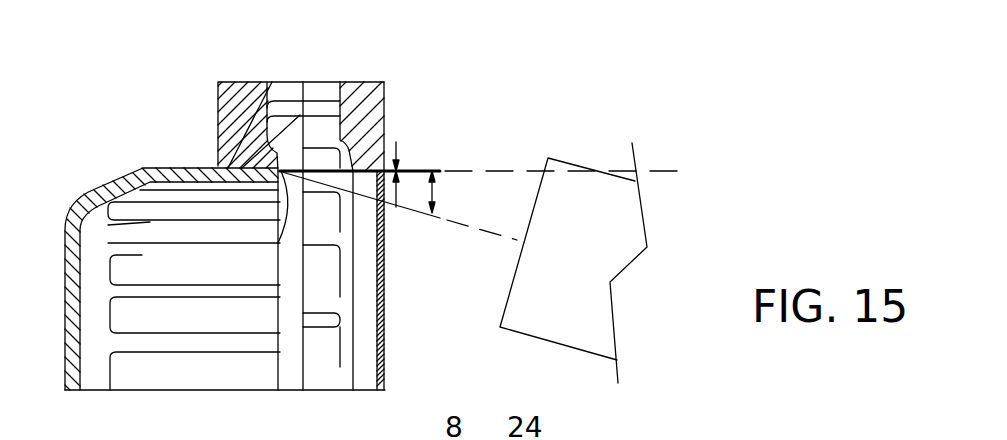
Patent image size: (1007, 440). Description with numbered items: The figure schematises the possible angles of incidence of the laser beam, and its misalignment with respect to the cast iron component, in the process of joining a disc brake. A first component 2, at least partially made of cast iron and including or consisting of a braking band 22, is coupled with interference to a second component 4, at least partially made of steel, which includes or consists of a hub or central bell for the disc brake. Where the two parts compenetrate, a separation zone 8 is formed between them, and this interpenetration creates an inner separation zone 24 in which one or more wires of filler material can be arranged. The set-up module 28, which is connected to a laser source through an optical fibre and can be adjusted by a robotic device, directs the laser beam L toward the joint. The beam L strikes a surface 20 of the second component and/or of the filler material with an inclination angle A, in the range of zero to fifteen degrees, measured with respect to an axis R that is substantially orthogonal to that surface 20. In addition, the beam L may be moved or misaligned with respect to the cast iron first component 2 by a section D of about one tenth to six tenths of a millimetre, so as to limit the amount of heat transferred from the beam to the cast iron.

The first component 2 is at (218, 122).
The second component 4 is at (98, 183).
The separation zone 8 is at (272, 83).
The surface 20 is at (276, 246).
The braking band 22 is at (384, 110).
The inner separation zone 24 is at (279, 170).
The set-up module 28 is at (590, 265).
The axis R is at (672, 171).
The laser beam L is at (477, 232).
The section D is at (397, 152).
The inclination angle A is at (432, 193).